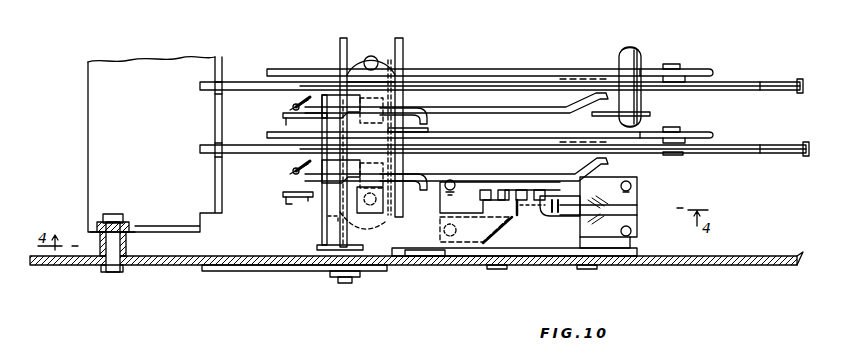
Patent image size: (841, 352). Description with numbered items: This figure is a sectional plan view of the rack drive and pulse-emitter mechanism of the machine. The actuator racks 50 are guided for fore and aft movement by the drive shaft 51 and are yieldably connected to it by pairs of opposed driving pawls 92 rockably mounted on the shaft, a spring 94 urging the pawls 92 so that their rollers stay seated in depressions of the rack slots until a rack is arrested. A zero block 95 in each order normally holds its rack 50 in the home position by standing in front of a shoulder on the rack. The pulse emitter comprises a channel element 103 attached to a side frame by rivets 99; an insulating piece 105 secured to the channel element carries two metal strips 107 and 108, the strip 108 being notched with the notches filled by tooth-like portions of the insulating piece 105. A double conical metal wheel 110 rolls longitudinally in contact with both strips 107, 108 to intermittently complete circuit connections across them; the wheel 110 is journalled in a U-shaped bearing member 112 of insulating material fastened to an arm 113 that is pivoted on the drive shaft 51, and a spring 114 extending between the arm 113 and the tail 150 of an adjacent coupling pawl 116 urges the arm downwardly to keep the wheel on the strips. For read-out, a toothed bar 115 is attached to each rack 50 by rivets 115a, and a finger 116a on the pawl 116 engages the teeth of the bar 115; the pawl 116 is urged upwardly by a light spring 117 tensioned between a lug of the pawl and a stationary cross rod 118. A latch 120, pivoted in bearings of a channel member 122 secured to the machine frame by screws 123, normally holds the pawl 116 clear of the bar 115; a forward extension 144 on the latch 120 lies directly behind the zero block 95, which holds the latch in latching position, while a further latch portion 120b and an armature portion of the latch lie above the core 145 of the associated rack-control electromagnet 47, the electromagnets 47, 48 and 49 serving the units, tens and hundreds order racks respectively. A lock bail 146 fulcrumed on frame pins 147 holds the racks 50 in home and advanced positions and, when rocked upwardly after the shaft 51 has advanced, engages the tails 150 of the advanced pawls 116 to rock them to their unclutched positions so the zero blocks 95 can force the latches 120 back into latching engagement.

The electromagnet 47 is at (383, 217).
The electromagnet 48 is at (428, 131).
The electromagnet 49 is at (403, 52).
The rack 50 is at (242, 84).
The drive shaft 51 is at (328, 234).
The driving pawl 92 is at (300, 98).
The spring 94 is at (292, 105).
The zero block 95 is at (322, 95).
The rivet 99 is at (495, 270).
The channel element 103 is at (605, 258).
The insulating piece 105 is at (474, 197).
The strip 107 is at (637, 237).
The strip 108 is at (632, 190).
The double conical metal wheel 110 is at (632, 216).
The U-shaped bearing member 112 is at (580, 220).
The arm 113 is at (440, 240).
The spring 114 is at (285, 200).
The toothed bar 115 is at (650, 72).
The rivet 115a is at (680, 66).
The coupling pawl 116 is at (520, 132).
The finger 116a is at (568, 78).
The light spring 117 is at (650, 113).
The stationary cross rod 118 is at (619, 58).
The latch 120 is at (396, 108).
The fitting 120b is at (452, 106).
The channel member 122 is at (351, 38).
The screw 123 is at (440, 256).
The forward extension 144 is at (343, 48).
The core 145 is at (380, 50).
The lock bail 146 is at (215, 190).
The frame pin 147 is at (110, 212).
The tail 150 is at (300, 118).